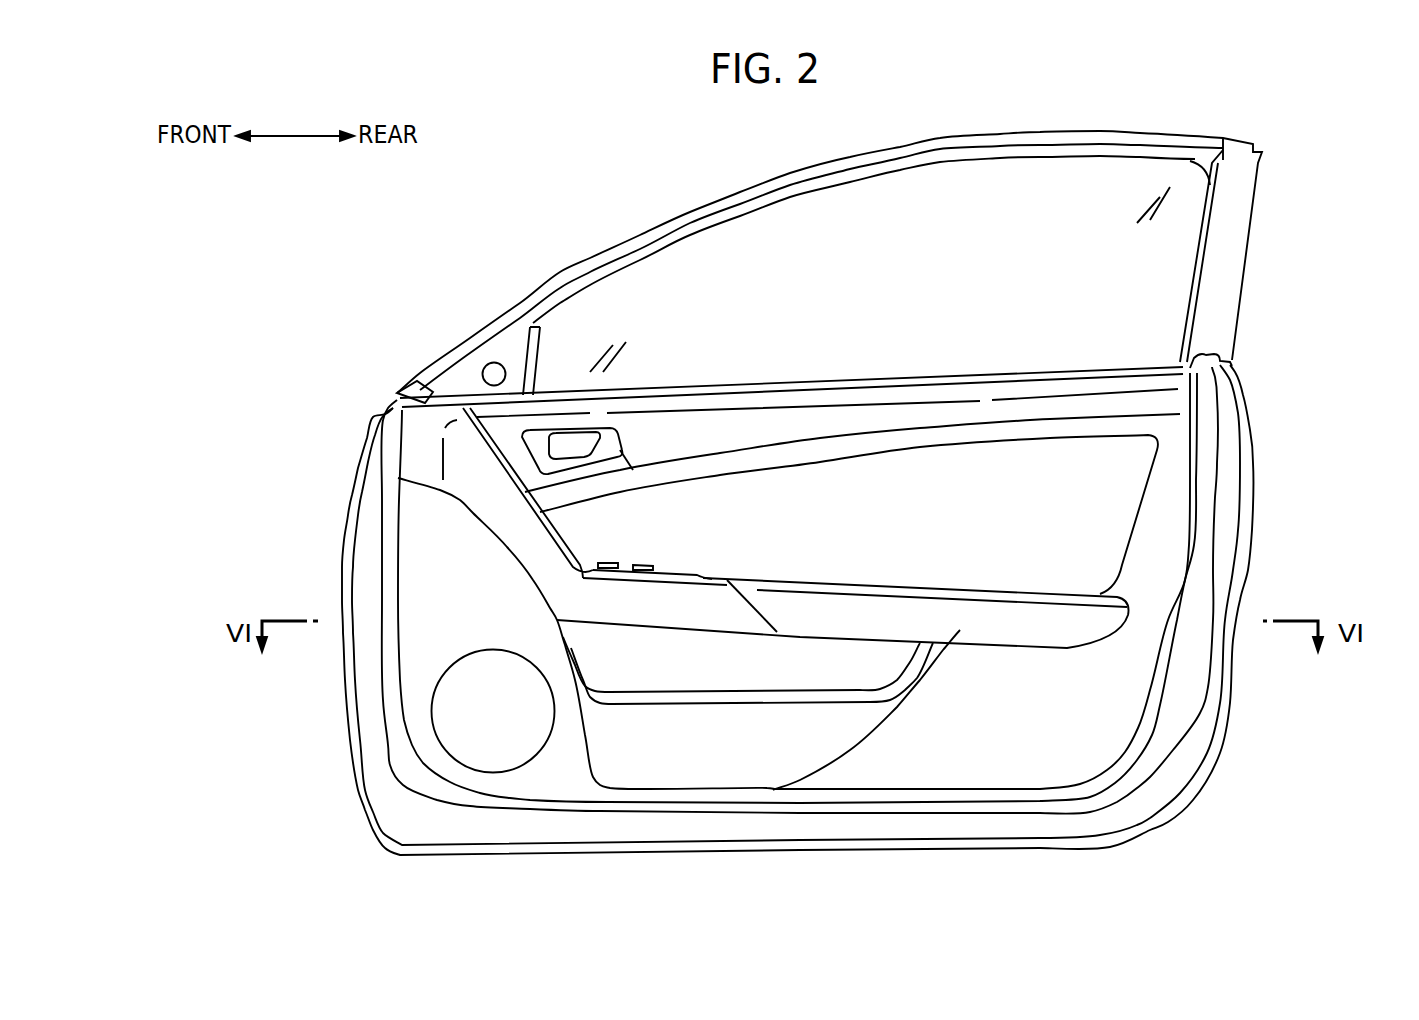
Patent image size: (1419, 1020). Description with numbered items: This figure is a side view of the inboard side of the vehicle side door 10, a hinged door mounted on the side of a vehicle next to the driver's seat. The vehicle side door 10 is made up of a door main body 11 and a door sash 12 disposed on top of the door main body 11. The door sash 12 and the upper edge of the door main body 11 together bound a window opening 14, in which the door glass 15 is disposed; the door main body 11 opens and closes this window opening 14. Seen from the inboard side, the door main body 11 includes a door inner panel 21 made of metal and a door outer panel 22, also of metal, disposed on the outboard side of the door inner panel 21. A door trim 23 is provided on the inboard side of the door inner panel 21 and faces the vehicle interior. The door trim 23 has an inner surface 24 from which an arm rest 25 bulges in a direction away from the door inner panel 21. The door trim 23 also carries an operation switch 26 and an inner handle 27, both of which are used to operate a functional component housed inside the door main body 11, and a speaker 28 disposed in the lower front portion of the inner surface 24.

The vehicle side door 10 is at (352, 328).
The door main body 11 is at (1348, 458).
The door sash 12 is at (757, 175).
The window opening 14 is at (1212, 296).
The door glass 15 is at (989, 232).
The door inner panel 21 is at (1213, 580).
The door outer panel 22 is at (1252, 468).
The door trim 23 is at (1125, 719).
The inner surface 24 is at (1053, 737).
The arm rest 25 is at (953, 640).
The operation switch 26 is at (647, 567).
The inner handle 27 is at (569, 455).
The speaker 28 is at (525, 768).